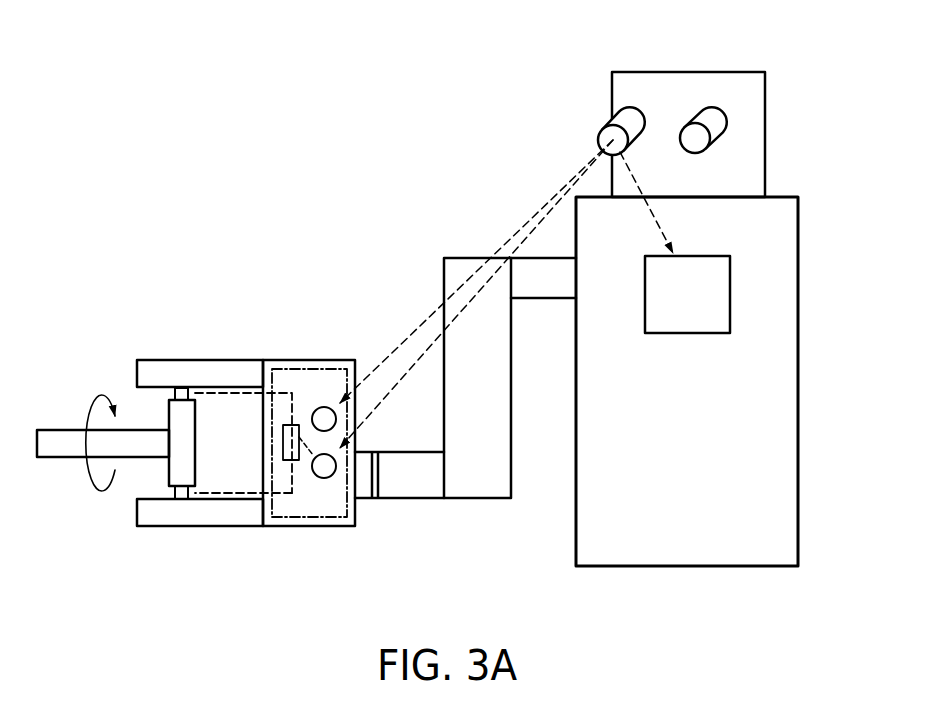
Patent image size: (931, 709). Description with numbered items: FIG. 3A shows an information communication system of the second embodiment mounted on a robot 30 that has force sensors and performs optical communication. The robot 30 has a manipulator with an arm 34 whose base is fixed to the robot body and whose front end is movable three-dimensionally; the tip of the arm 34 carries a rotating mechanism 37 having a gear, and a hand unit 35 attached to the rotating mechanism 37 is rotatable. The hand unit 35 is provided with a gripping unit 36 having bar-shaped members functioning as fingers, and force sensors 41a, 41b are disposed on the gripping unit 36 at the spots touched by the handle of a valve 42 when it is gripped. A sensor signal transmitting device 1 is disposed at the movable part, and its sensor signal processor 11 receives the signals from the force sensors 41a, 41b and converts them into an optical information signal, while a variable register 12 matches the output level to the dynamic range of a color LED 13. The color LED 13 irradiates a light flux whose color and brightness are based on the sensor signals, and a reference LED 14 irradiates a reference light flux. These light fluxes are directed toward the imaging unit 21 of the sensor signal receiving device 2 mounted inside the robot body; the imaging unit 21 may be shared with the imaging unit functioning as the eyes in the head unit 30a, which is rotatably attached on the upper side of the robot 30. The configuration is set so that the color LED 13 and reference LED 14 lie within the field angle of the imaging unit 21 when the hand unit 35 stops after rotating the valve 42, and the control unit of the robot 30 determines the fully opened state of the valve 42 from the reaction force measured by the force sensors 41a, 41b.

The sensor signal transmitting device 1 is at (305, 367).
The sensor signal receiving device 2 is at (730, 297).
The sensor signal processor 11 is at (254, 377).
The variable register 12 is at (243, 443).
The color LED 13 is at (330, 478).
The reference LED 14 is at (327, 407).
The imaging unit 21 is at (630, 107).
The robot 30 is at (798, 477).
The head unit 30a is at (725, 72).
The arm 34 is at (472, 498).
The hand unit 35 is at (295, 527).
The gripping unit 36 is at (230, 527).
The rotating mechanism 37 is at (375, 462).
The force sensor 41a is at (183, 499).
The force sensor 41b is at (181, 388).
The valve 42 is at (52, 457).